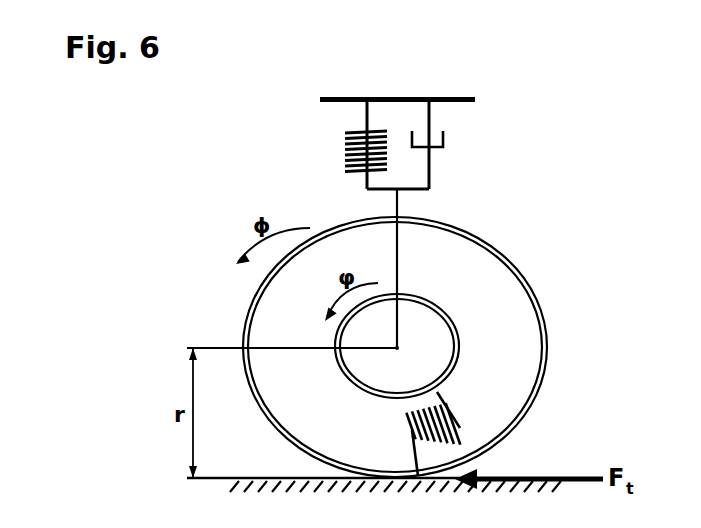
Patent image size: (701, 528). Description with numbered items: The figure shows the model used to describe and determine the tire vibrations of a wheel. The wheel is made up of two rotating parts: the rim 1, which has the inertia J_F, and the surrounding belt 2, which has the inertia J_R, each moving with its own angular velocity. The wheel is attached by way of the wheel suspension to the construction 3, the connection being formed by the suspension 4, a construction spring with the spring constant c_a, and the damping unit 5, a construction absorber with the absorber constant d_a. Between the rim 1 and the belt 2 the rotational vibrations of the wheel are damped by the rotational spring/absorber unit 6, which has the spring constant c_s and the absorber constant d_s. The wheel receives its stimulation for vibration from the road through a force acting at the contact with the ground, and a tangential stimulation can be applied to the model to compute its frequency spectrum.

The rim 1 is at (416, 290).
The belt 2 is at (516, 257).
The construction 3 is at (399, 98).
The suspension 4 is at (367, 118).
The damping unit 5 is at (430, 162).
The rotational spring/absorber unit 6 is at (466, 410).